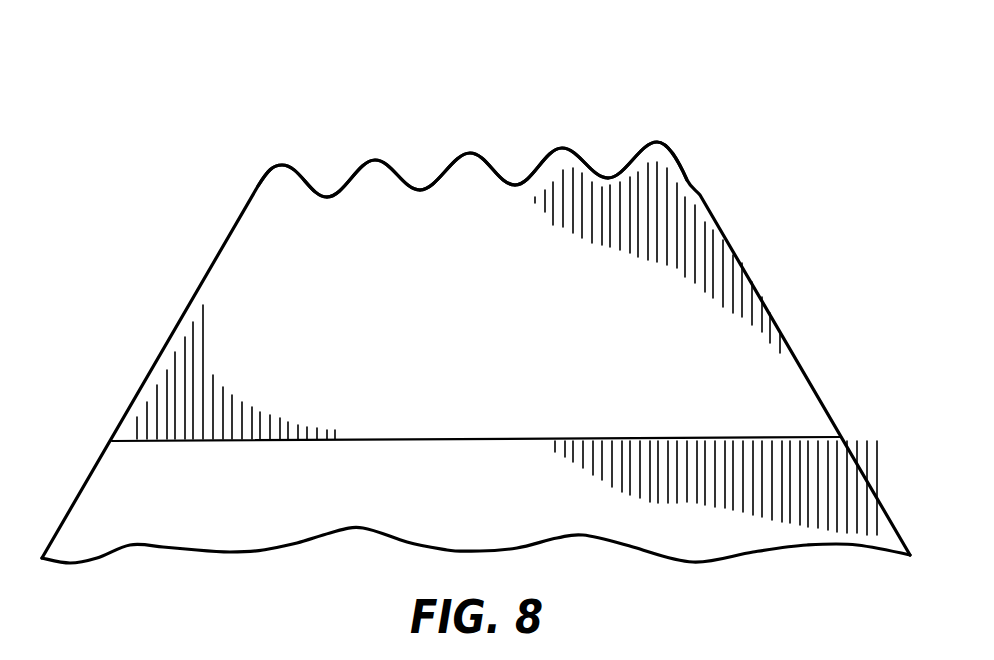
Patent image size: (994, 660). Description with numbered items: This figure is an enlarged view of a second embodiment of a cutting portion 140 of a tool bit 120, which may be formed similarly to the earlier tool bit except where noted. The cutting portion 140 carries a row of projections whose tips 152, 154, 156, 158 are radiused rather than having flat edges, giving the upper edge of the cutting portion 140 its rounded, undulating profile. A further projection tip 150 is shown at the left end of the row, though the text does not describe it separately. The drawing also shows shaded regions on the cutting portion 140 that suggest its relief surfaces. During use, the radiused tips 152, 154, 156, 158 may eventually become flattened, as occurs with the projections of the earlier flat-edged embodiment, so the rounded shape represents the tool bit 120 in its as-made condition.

The tool bit 120 is at (420, 62).
The cutting portion 140 is at (175, 347).
The first lobe 150 is at (272, 178).
The tip of projection 152 is at (370, 168).
The tip of projection 154 is at (460, 165).
The tip of projection 156 is at (555, 158).
The tip of projection 158 is at (650, 155).